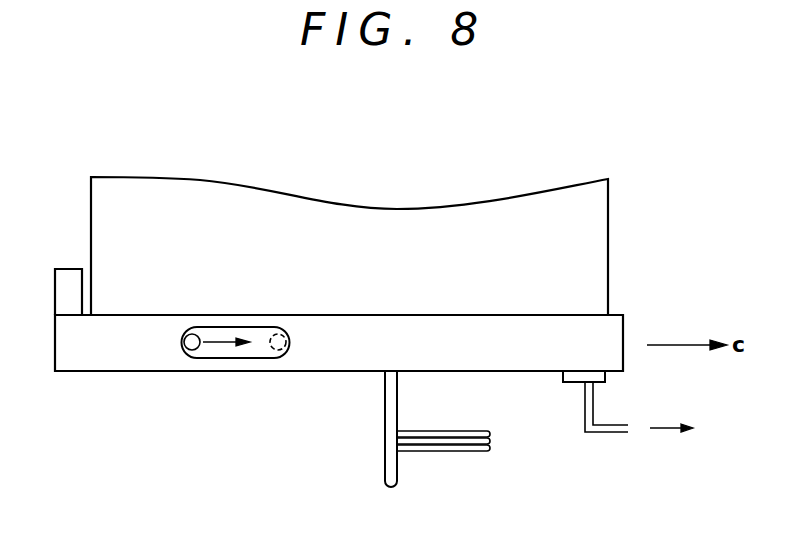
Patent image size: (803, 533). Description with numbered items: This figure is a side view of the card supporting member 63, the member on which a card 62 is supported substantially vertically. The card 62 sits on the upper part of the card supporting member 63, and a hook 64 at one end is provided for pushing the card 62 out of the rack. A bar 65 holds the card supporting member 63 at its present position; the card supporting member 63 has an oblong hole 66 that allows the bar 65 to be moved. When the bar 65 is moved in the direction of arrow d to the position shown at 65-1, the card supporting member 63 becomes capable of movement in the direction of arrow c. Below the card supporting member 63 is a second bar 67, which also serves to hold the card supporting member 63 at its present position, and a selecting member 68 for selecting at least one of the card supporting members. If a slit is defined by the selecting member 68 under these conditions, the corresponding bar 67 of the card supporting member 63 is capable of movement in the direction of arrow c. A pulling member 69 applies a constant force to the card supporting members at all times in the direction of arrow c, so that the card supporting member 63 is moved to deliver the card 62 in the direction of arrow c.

The card 62 is at (598, 258).
The card supporting member 63 is at (615, 355).
The hook 64 is at (70, 297).
The bar 65 is at (193, 353).
The position of the bar 65-1 is at (275, 332).
The oblong hole 66 is at (253, 350).
The bar 67 is at (385, 420).
The selecting member 68 is at (450, 438).
The pulling member 69 is at (587, 428).